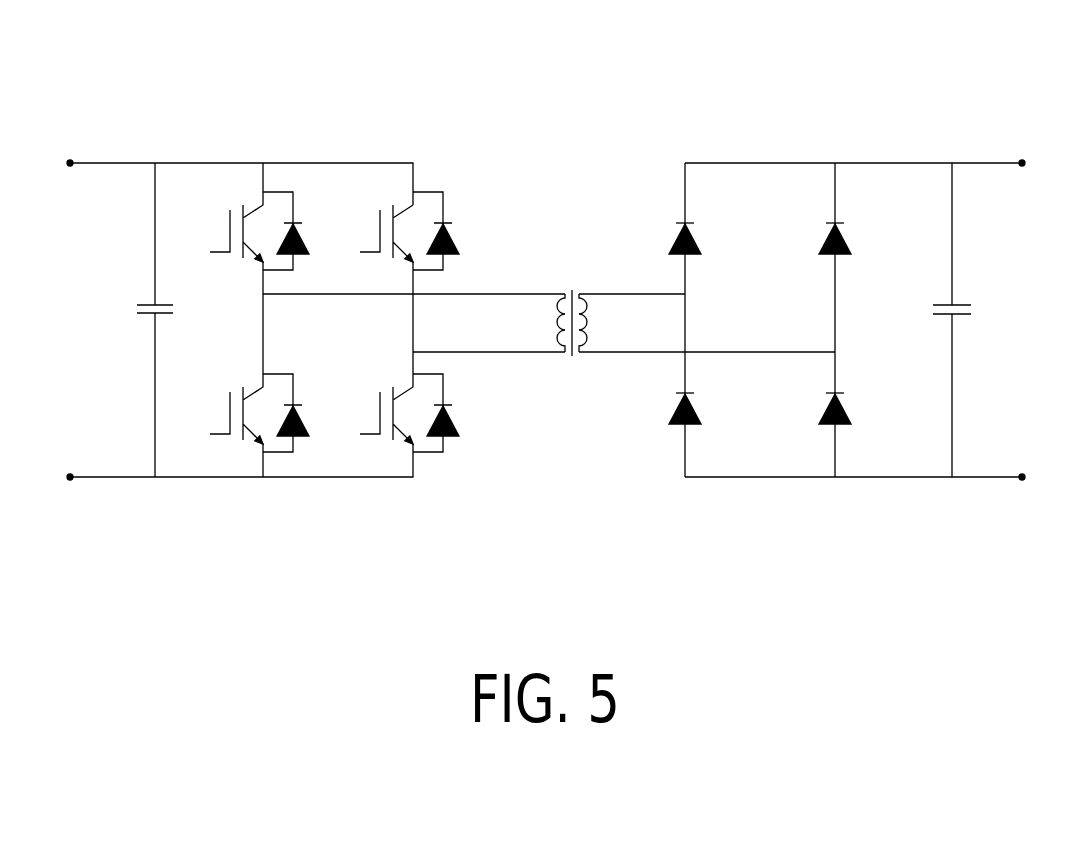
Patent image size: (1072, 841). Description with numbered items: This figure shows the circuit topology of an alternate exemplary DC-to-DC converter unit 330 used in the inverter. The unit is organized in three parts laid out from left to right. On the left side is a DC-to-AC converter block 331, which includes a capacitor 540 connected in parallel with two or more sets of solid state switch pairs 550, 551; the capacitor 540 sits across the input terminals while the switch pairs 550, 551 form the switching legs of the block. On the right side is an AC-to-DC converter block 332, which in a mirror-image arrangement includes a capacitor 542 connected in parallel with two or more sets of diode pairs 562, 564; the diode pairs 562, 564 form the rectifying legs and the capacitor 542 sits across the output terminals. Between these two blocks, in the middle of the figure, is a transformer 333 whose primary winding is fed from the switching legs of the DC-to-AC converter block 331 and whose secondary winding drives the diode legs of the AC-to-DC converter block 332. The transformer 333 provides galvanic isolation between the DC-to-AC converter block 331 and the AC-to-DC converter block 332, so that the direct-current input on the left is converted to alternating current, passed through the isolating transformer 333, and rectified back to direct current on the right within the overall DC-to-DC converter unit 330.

The DC-to-DC converter unit 330 is at (402, 100).
The DC-to-AC converter block 331 is at (196, 400).
The AC-to-DC converter block 332 is at (918, 398).
The transformer 333 is at (566, 269).
The capacitor 540 is at (137, 308).
The capacitor 542 is at (968, 313).
The solid state switch pair 550 is at (247, 259).
The solid state switch pair 551 is at (253, 386).
The diode pair 562 is at (693, 233).
The diode pair 564 is at (696, 405).